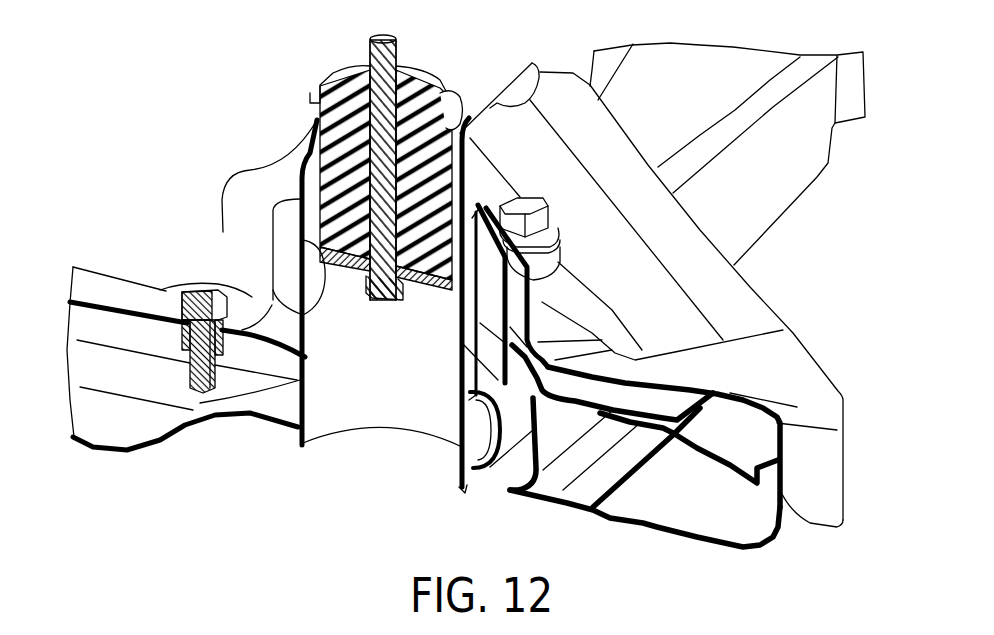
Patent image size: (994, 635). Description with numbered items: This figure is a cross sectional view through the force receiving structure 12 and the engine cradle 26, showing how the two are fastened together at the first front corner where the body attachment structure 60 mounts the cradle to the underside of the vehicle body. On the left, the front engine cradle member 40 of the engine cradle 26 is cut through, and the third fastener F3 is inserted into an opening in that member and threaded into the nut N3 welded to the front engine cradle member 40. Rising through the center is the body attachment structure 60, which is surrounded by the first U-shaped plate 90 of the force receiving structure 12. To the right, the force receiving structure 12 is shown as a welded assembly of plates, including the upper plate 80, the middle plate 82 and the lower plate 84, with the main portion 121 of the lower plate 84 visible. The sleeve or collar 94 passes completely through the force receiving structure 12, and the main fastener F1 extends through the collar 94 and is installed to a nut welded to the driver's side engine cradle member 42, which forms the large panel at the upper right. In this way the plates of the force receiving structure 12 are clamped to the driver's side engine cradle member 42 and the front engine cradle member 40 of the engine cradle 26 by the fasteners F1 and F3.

The driver's side engine cradle member 42 is at (737, 78).
The force receiving structure 12 is at (705, 232).
The upper plate 80 is at (732, 300).
The main portion 121 is at (800, 336).
The sleeve or collar 94 is at (543, 252).
The main fastener F1 is at (520, 210).
The body attachment structure 60 is at (298, 205).
The engine cradle 26 is at (90, 258).
The front engine cradle member 40 is at (120, 296).
The third fastener F3 is at (200, 290).
The first U-shaped plate 90 is at (297, 280).
The nut N3 is at (212, 345).
The lower plate 84 is at (570, 462).
The middle plate 82 is at (627, 393).